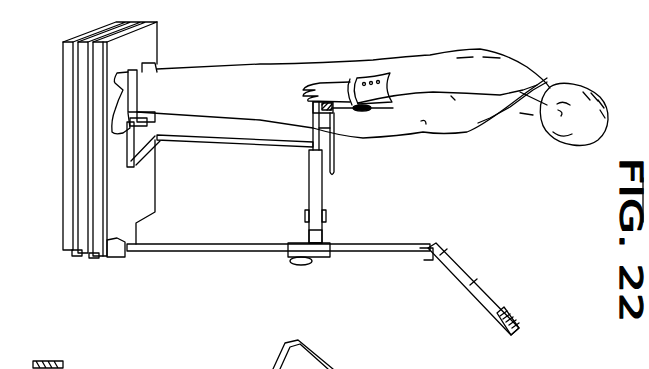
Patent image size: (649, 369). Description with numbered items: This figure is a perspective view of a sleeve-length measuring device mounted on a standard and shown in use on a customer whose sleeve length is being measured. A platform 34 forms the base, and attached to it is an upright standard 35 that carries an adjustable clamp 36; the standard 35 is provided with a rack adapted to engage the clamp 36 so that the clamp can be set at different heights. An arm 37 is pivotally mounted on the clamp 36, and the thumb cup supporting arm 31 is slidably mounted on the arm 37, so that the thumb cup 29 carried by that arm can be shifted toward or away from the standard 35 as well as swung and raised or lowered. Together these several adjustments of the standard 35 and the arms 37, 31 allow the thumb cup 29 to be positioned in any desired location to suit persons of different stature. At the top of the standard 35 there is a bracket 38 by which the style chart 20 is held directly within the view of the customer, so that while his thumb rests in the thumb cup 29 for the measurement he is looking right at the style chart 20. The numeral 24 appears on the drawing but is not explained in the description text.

The style chart 20 is at (513, 311).
The handle 24 is at (333, 113).
The thumb cup 29 is at (288, 98).
The thumb cup supporting arm 31 is at (287, 112).
The platform 34 is at (148, 170).
The standard 35 is at (190, 252).
The adjustable clamp 36 is at (327, 253).
The arm 37 is at (311, 183).
The bracket 38 is at (435, 263).